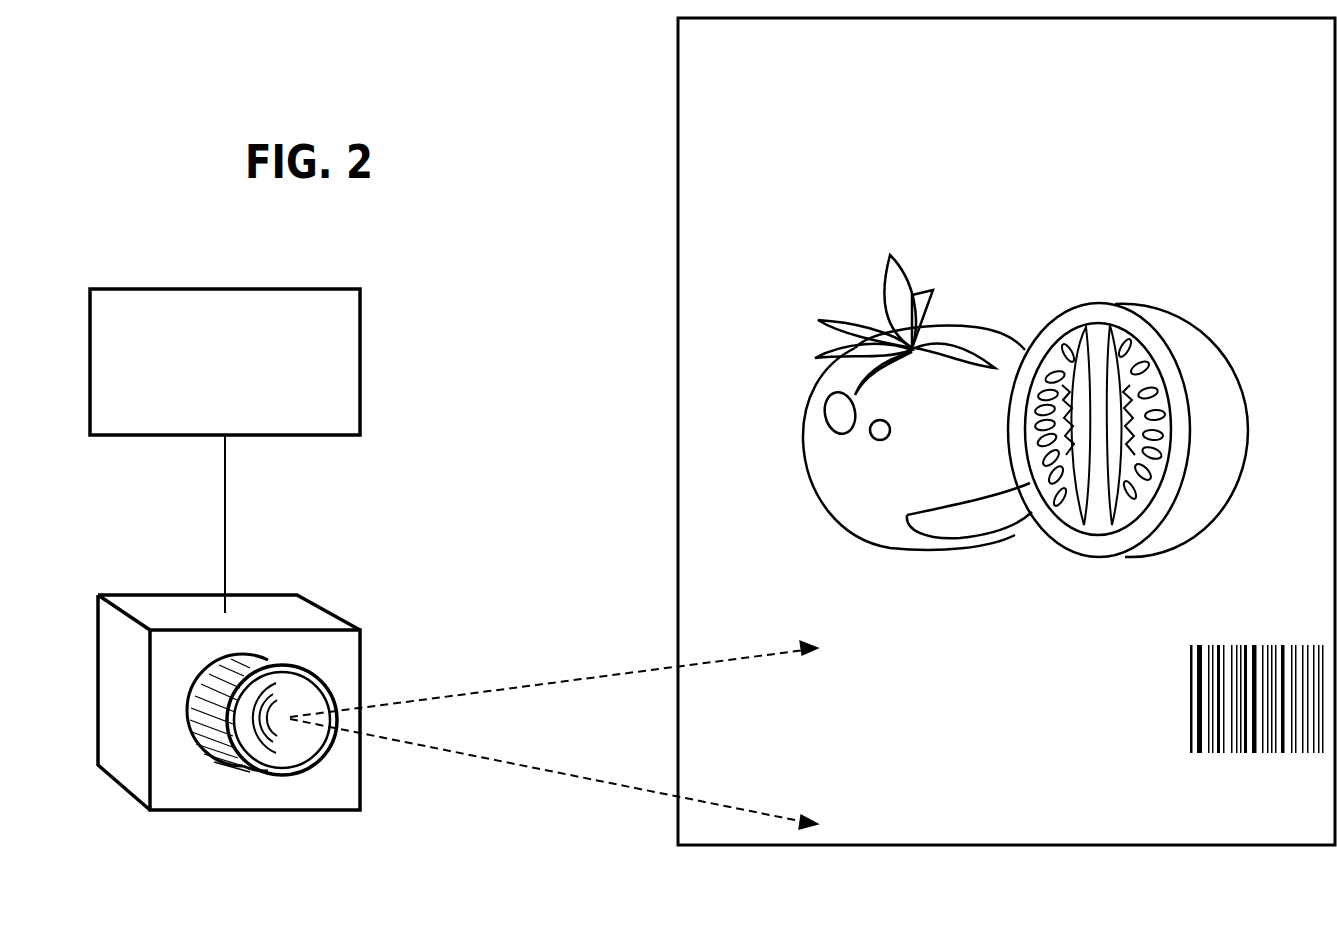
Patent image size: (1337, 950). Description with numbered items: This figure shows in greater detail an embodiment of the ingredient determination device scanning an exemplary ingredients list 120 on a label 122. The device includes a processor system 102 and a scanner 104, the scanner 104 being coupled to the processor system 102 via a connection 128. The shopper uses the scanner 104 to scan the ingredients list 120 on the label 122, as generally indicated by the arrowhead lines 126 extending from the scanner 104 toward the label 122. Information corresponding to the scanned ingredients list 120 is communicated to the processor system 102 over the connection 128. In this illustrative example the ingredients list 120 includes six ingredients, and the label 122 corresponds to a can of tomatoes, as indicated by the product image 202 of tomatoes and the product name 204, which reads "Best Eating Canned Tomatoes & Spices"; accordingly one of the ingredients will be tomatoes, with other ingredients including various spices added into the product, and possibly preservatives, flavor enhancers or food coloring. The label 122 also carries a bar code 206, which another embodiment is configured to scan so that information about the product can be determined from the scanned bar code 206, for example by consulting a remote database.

The processor system 102 is at (340, 413).
The scanner 104 is at (215, 800).
The connection 128 is at (259, 524).
The arrowhead lines 126 is at (503, 690).
The label 122 is at (1334, 833).
The product name 204 is at (895, 162).
The product image 202 is at (797, 330).
The ingredients list 120 is at (908, 665).
The bar code 206 is at (1228, 627).